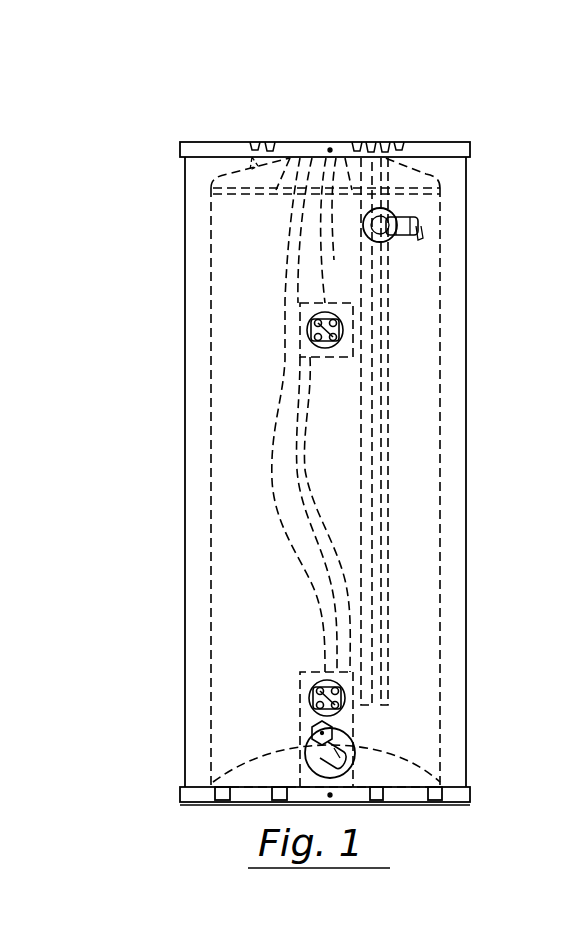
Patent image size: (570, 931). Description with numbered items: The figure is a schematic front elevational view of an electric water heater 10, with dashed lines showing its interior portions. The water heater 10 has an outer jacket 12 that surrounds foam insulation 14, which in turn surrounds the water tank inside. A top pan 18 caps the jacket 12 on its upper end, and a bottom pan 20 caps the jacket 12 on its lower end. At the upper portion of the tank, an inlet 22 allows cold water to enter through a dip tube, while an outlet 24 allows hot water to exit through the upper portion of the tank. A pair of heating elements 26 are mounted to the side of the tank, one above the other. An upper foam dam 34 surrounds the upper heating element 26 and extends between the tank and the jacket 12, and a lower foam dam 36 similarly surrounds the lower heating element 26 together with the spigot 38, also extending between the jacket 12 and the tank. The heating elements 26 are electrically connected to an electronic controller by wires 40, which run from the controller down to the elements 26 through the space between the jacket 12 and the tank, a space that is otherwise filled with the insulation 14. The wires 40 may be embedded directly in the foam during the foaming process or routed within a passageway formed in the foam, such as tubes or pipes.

The electric water heater 10 is at (128, 397).
The outer jacket 12 is at (185, 585).
The foam insulation 14 is at (202, 557).
The top pan 18 is at (203, 141).
The bottom pan 20 is at (200, 805).
The inlet 22 is at (385, 142).
The outlet 24 is at (263, 142).
The heating elements 26 is at (308, 323).
The upper foam dam 34 is at (300, 303).
The lower foam dam 36 is at (300, 672).
The spigot 38 is at (340, 765).
The wires 40 is at (333, 258).